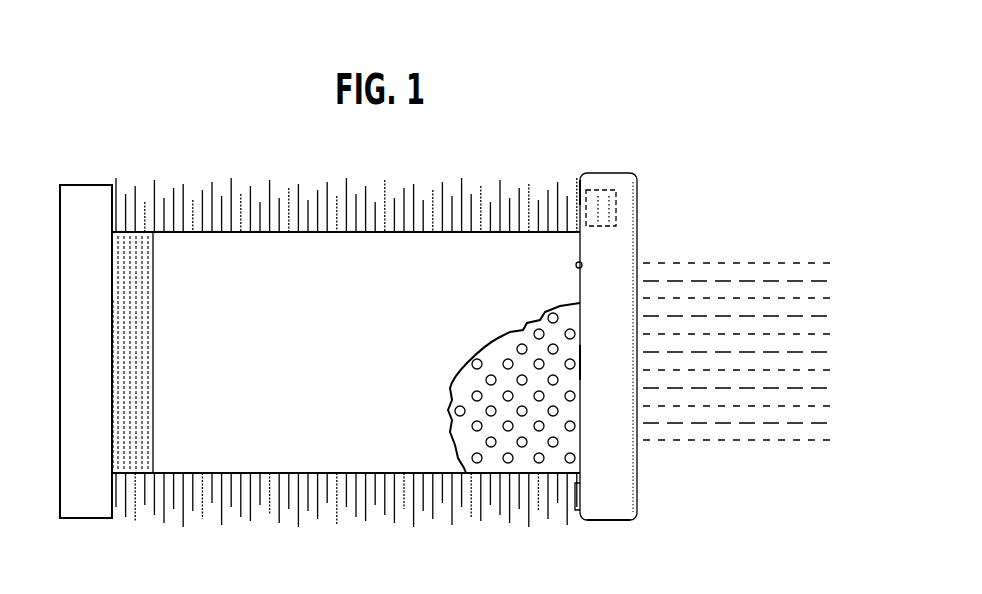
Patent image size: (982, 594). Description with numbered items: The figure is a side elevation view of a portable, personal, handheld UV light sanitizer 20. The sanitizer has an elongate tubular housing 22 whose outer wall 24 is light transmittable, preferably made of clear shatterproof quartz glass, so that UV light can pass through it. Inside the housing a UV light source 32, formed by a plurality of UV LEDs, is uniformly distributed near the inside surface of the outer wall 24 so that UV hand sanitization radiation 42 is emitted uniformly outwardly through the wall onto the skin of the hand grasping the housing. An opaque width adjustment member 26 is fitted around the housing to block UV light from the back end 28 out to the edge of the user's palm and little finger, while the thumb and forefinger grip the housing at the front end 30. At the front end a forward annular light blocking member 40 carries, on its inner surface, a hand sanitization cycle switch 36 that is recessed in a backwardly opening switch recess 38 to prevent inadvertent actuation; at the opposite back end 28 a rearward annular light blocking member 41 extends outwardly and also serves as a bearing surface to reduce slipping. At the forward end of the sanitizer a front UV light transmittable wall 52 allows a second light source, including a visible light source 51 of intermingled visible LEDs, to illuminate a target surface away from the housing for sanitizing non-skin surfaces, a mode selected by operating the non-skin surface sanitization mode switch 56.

The UV light sanitizer 20 is at (645, 186).
The tubular housing 22 is at (408, 248).
The outer wall 24 is at (260, 476).
The width adjustment member 26 is at (146, 270).
The back end 28 is at (116, 440).
The front end 30 is at (580, 258).
The UV light source 32 is at (573, 368).
The hand sanitization cycle switch 36 is at (597, 192).
The switch recess 38 is at (580, 193).
The forward annular light blocking member 40 is at (625, 505).
The rearward annular light blocking member 41 is at (100, 185).
The UV hand sanitization radiation 42 is at (372, 190).
The visible light source 51 is at (772, 315).
The front UV light transmittable wall 52 is at (578, 360).
The non-skin surface sanitization mode switch 56 is at (572, 502).